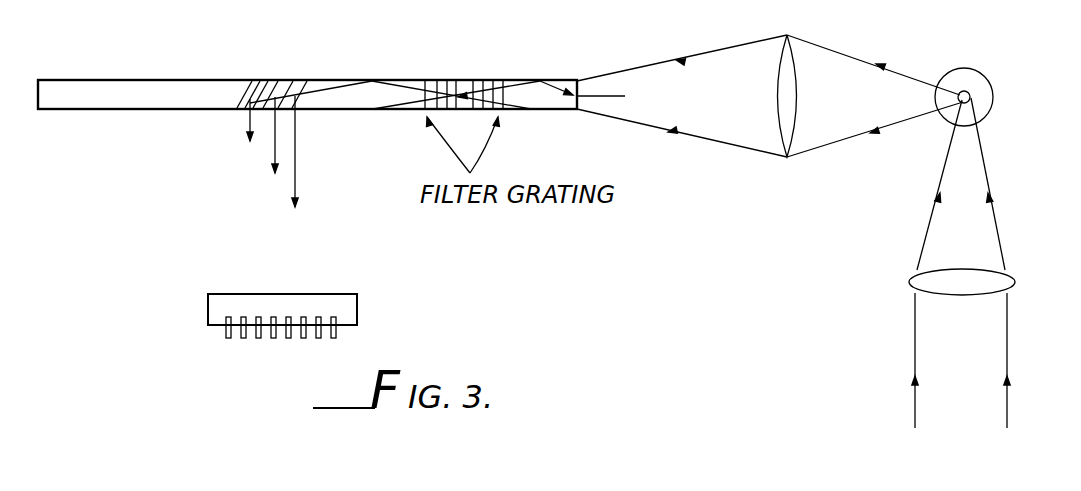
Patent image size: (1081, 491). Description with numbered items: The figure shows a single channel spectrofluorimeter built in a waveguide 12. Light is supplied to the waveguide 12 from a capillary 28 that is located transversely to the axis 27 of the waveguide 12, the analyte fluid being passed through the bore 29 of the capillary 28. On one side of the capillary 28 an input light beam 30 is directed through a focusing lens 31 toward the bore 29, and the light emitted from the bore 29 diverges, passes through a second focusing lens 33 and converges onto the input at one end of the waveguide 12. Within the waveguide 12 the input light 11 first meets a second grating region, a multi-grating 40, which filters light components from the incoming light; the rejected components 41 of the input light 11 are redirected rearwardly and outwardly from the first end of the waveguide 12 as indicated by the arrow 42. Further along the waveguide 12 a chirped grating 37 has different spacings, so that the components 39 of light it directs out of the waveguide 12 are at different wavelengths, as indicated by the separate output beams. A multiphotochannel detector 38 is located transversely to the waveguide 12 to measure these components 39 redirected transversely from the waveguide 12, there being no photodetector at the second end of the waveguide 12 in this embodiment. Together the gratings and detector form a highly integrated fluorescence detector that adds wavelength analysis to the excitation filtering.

The input light 11 is at (645, 67).
The waveguide 12 is at (392, 110).
The axis 27 is at (603, 96).
The capillary 28 is at (984, 67).
The bore 29 is at (970, 95).
The input light beam 30 is at (913, 352).
The focusing lens 31 is at (909, 281).
The focusing lens 33 is at (787, 162).
The chirped grating 37 is at (326, 75).
The multiphotochannel detector 38 is at (207, 306).
The components of light 39 is at (250, 121).
The multi-grating 40 is at (437, 80).
The components of the input light 41 is at (517, 81).
The arrow 42 is at (540, 80).